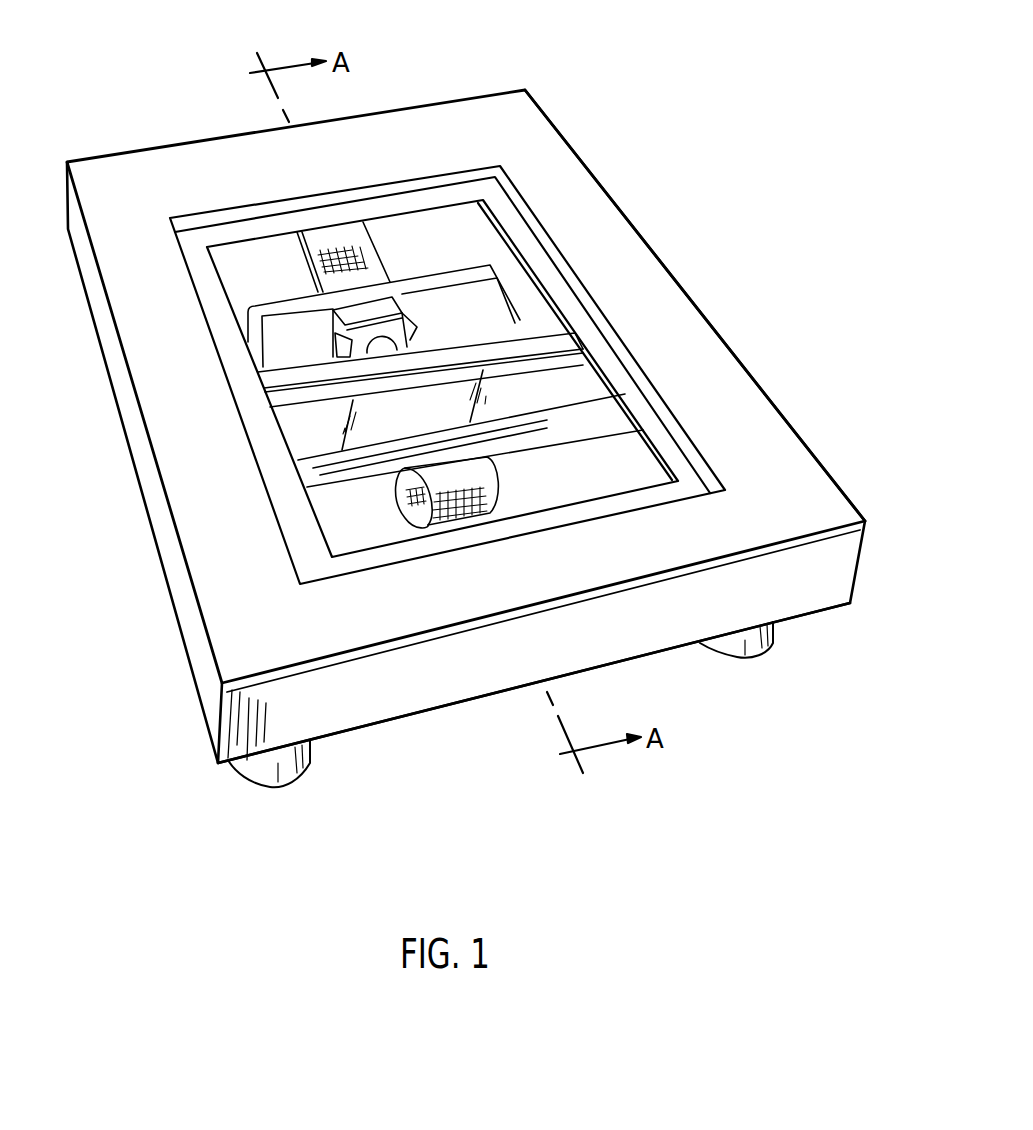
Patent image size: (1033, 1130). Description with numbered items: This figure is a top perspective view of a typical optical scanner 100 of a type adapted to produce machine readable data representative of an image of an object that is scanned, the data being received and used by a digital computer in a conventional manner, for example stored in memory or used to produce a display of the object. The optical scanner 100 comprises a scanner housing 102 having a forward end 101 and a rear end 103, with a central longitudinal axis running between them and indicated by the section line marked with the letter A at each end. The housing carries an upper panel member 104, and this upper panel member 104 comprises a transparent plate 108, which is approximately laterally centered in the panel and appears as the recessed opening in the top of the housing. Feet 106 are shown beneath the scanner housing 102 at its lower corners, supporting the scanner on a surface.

The optical scanner 100 is at (716, 158).
The forward end 101 is at (580, 580).
The scanner housing 102 is at (755, 365).
The rear end 103 is at (192, 158).
The upper panel member 104 is at (790, 457).
The feet 106 is at (830, 588).
The transparent plate 108 is at (450, 227).